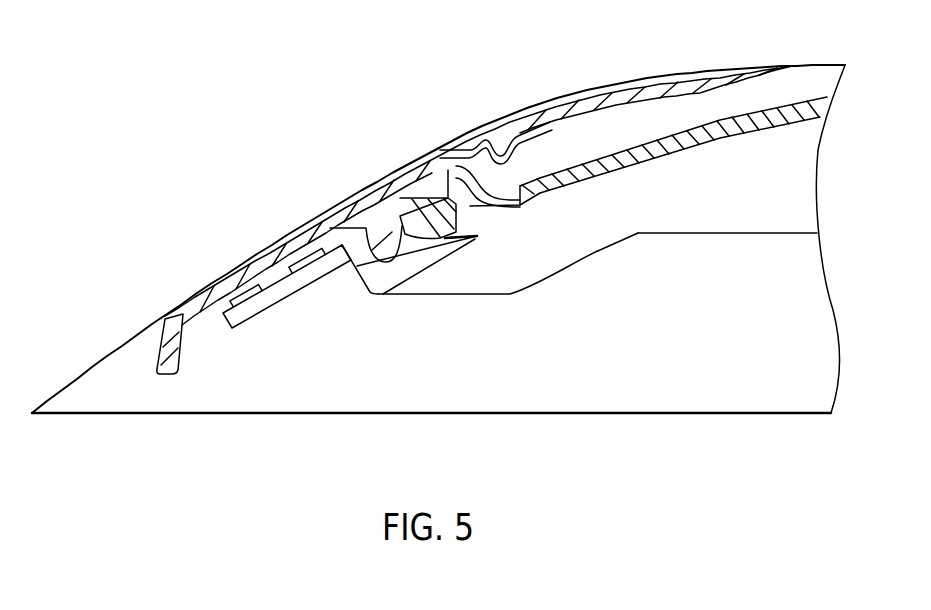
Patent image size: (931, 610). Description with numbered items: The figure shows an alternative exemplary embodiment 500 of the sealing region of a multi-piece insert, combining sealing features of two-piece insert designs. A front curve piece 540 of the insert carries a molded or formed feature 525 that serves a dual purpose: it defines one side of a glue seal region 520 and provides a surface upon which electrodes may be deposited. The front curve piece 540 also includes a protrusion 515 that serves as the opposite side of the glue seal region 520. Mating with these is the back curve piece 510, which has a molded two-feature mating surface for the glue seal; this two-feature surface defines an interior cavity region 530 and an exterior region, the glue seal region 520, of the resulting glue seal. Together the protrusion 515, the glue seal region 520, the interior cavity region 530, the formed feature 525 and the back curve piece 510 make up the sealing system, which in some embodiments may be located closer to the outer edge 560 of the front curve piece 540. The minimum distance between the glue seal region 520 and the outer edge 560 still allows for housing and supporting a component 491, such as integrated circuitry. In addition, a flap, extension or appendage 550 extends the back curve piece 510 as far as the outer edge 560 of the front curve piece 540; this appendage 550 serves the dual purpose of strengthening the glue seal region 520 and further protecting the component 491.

The exemplary embodiment 500 is at (167, 80).
The front curve piece 540 is at (568, 98).
The glue seal region 520 is at (385, 212).
The protrusion 515 is at (359, 233).
The interior cavity region 530 is at (434, 177).
The molded or formed feature 525 is at (501, 137).
The back curve piece 510 is at (498, 227).
The appendage 550 is at (401, 274).
The component 491 is at (230, 326).
The outer edge 560 is at (170, 313).